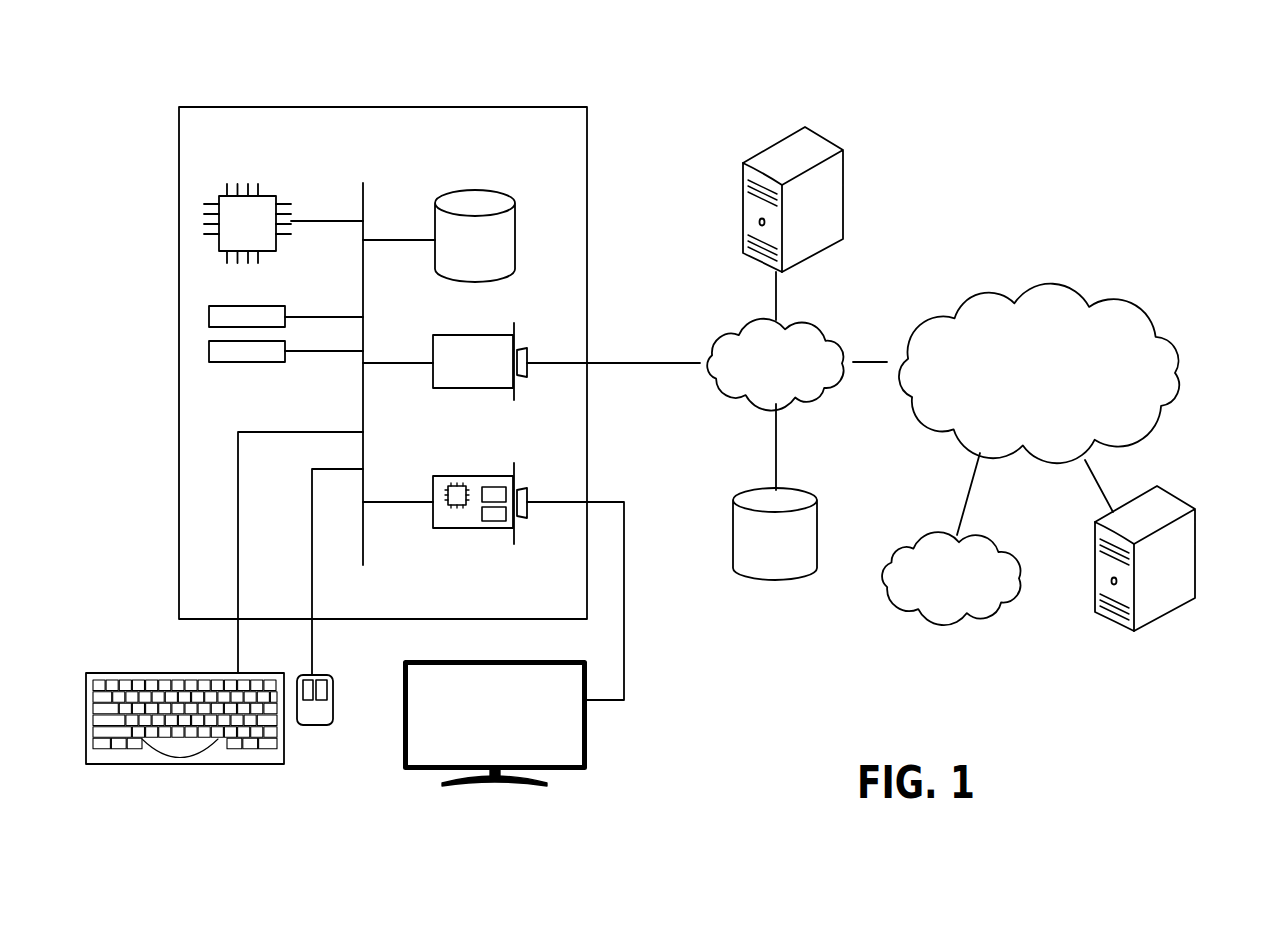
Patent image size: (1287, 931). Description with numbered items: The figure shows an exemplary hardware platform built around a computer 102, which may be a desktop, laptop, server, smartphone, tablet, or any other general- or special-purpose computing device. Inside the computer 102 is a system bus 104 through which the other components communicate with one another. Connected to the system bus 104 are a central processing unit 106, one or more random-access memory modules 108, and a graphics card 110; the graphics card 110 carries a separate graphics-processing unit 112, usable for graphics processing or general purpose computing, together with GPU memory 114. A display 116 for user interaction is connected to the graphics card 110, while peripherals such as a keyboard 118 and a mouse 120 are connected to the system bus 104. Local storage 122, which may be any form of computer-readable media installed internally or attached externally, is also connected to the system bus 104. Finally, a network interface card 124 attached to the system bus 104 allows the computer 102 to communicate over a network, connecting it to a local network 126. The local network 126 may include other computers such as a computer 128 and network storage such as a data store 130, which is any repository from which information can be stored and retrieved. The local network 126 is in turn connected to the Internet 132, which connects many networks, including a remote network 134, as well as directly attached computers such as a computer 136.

The computer 102 is at (542, 107).
The system bus 104 is at (363, 193).
The central processing unit 106 is at (268, 188).
The random-access memory modules 108 is at (285, 345).
The graphics card 110 is at (493, 565).
The graphics-processing unit 112 is at (455, 510).
The GPU memory 114 is at (492, 517).
The display 116 is at (587, 750).
The keyboard 118 is at (187, 764).
The mouse 120 is at (310, 727).
The local storage 122 is at (517, 222).
The network interface card 124 is at (433, 347).
The local network 126 is at (828, 322).
The computer 128 is at (828, 137).
The data store 130 is at (805, 490).
The Internet 132 is at (1083, 283).
The remote network 134 is at (1007, 532).
The computer 136 is at (1175, 488).